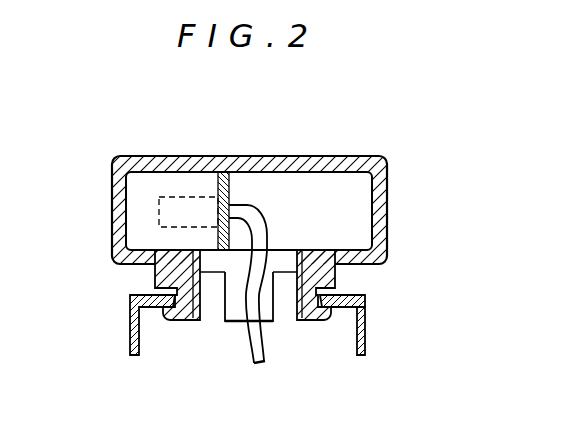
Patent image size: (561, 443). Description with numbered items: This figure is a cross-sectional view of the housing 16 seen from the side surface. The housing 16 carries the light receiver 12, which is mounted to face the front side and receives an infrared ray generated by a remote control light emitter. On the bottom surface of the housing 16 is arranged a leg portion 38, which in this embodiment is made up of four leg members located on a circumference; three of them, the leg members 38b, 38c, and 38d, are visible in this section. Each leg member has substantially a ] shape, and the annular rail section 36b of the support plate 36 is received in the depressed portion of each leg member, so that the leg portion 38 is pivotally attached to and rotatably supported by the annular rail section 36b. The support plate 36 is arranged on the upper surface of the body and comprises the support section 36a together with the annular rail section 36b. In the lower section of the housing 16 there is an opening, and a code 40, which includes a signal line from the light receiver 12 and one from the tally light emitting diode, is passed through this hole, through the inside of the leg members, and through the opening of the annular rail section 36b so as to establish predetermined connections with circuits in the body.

The light receiver 12 is at (201, 197).
The housing 16 is at (390, 224).
The support plate 36 is at (392, 325).
The support section 36a is at (365, 353).
The annular rail section 36b is at (356, 295).
The leg portion 38 is at (153, 280).
The leg member 38b is at (178, 326).
The leg member 38c is at (233, 326).
The leg member 38d is at (319, 326).
The code 40 is at (262, 344).